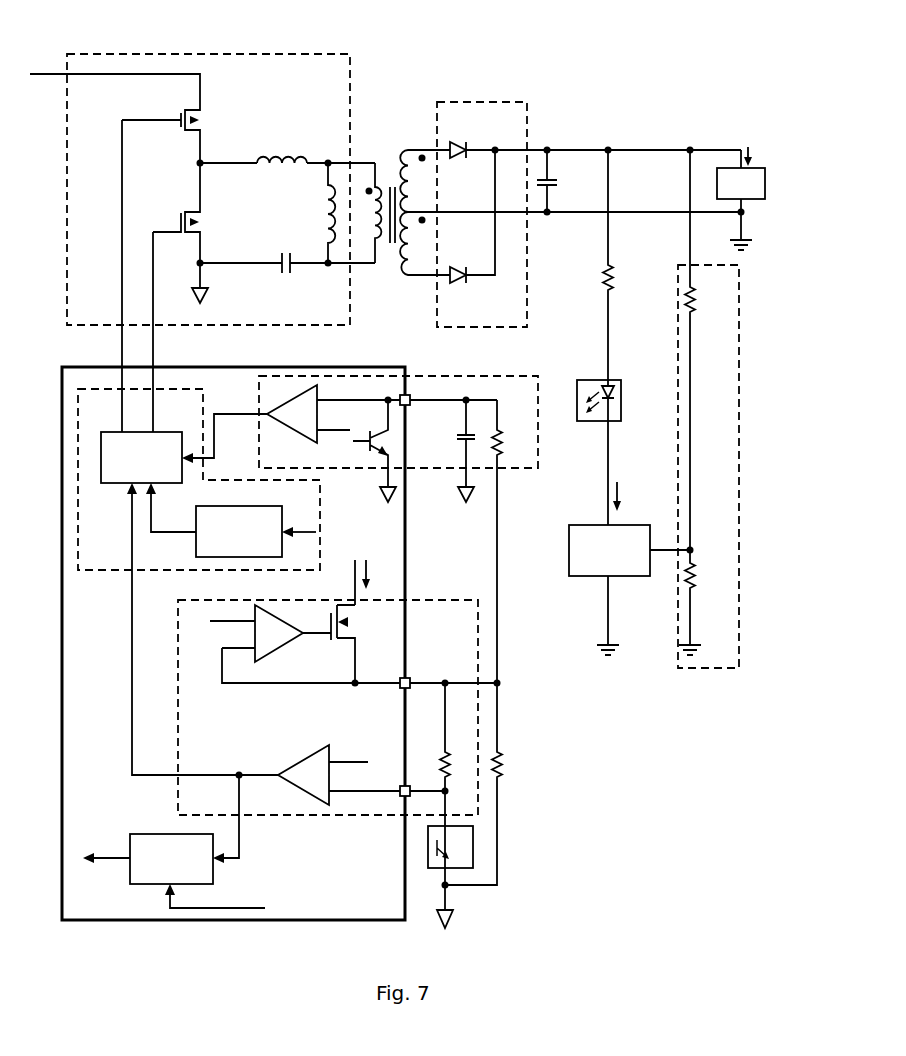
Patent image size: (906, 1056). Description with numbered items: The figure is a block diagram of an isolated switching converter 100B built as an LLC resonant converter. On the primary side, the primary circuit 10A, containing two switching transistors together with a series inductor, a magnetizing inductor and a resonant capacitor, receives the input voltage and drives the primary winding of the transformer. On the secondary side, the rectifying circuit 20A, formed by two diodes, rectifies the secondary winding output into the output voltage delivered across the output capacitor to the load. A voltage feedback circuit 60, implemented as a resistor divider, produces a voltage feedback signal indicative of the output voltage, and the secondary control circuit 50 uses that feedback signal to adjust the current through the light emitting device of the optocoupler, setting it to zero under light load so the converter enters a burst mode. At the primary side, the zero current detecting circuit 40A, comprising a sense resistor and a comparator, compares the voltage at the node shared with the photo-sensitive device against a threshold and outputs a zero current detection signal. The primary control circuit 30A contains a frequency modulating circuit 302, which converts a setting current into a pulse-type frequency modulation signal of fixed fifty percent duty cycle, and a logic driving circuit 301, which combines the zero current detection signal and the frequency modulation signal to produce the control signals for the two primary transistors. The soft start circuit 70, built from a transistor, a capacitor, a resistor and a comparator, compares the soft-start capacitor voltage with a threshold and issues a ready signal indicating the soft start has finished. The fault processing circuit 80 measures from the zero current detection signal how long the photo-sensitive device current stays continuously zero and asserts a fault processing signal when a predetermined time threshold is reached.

The isolated switching converter 100B is at (716, 24).
The primary circuit 10A is at (96, 326).
The rectifying circuit 20A is at (465, 327).
The primary control circuit 30A is at (112, 570).
The logic driving circuit 301 is at (118, 483).
The frequency modulating circuit 302 is at (268, 506).
The zero current detecting circuit 40A is at (308, 815).
The secondary control circuit 50 is at (580, 576).
The voltage feedback circuit 60 is at (690, 668).
The soft start circuit 70 is at (517, 469).
The fault processing circuit 80 is at (140, 884).